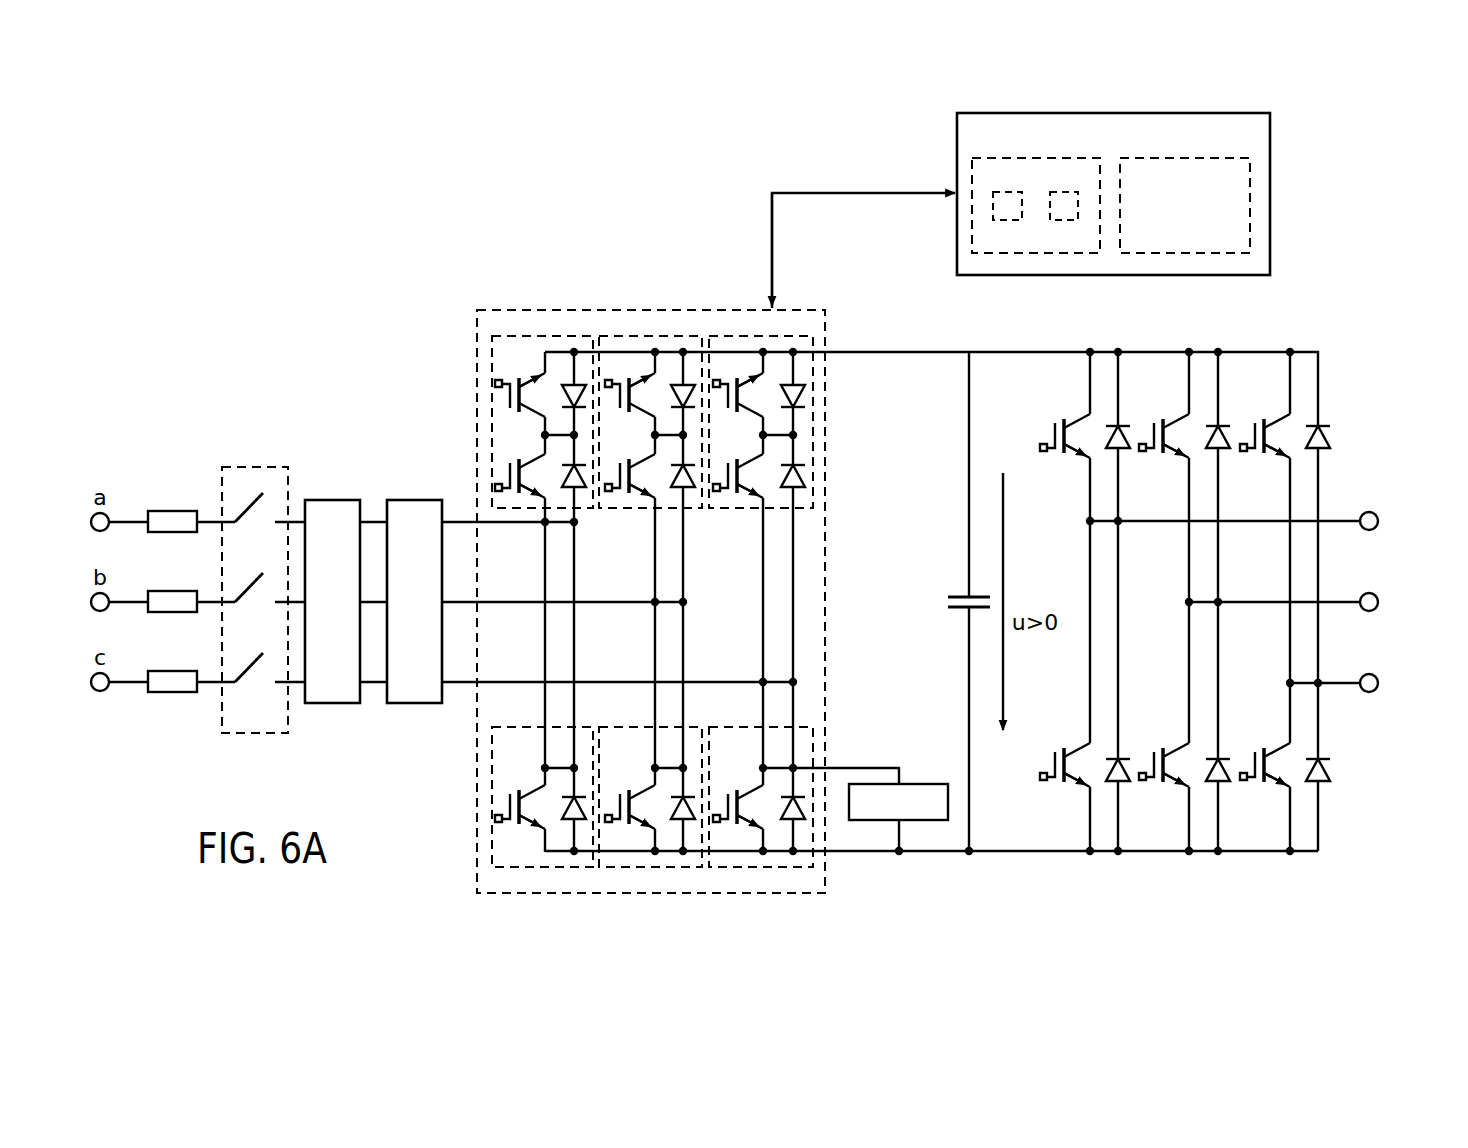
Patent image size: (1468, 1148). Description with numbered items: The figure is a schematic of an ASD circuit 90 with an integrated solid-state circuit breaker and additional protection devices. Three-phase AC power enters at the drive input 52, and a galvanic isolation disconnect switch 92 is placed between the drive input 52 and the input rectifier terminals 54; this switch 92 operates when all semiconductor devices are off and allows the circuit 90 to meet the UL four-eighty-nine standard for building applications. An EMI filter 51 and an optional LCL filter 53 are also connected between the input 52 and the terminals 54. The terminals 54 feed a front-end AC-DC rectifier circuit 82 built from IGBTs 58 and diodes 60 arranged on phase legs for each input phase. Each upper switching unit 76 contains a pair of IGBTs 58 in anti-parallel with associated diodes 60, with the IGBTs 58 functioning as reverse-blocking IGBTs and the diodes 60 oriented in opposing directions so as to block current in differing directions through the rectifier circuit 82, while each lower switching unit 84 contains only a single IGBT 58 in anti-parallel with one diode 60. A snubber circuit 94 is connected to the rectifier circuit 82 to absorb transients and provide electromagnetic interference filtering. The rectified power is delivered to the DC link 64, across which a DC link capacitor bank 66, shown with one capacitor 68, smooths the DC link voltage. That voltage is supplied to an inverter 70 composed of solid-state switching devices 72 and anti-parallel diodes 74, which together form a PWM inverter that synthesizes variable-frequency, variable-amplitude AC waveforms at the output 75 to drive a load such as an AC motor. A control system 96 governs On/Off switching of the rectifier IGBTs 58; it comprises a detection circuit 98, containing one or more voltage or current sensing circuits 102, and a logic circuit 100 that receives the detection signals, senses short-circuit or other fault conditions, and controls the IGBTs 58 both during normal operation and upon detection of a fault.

The drive input 52 is at (125, 512).
The galvanic isolation disconnect switch 92 is at (248, 462).
The EMI filter 51 is at (327, 500).
The LCL filter 53 is at (408, 500).
The IGBT 58 is at (537, 455).
The diode 60 is at (580, 492).
The input rectifier terminals 54 is at (673, 596).
The upper switching unit 76 is at (636, 333).
The rectifier circuit 82 is at (672, 305).
The lower switching unit 84 is at (568, 872).
The snubber circuit 94 is at (923, 784).
The DC link 64 is at (935, 855).
The DC link capacitor bank 66 is at (955, 625).
The capacitor 68 is at (964, 642).
The inverter 70 is at (1298, 312).
The solid state switching device 72 is at (1076, 415).
The anti-parallel diode 74 is at (1120, 422).
The output 75 is at (1388, 622).
The ASD circuit 90 is at (1310, 238).
The control system 96 is at (1113, 113).
The detection circuit 98 is at (1037, 254).
The logic circuit 100 is at (1223, 158).
The sensing circuit 102 is at (993, 206).